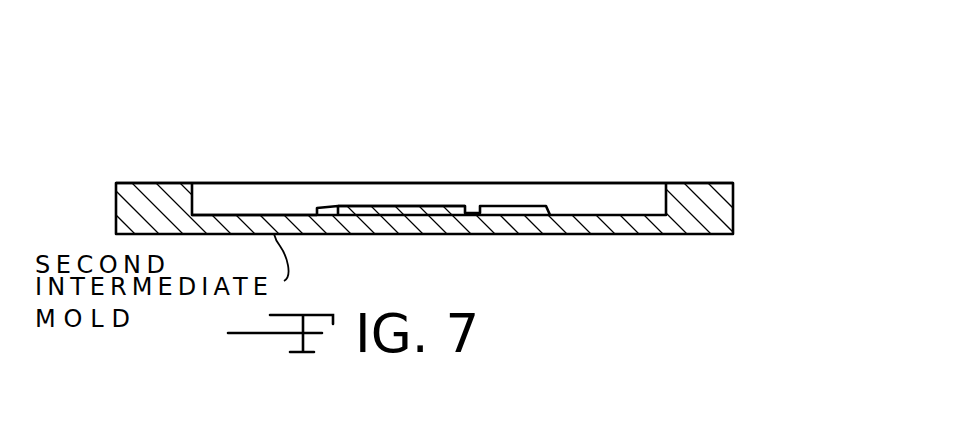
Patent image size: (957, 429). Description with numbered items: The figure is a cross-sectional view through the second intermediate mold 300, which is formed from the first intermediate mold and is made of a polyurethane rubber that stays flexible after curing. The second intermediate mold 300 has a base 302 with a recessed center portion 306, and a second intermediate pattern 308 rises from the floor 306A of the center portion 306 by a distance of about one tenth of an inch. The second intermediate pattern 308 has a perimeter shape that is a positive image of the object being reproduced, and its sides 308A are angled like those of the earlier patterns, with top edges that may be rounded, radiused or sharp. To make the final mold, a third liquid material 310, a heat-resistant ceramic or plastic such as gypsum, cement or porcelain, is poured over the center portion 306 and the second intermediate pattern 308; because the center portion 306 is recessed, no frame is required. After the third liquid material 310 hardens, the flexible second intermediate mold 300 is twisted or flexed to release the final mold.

The second intermediate mold 300 is at (572, 175).
The base 302 is at (720, 203).
The center portion 306 is at (623, 212).
The floor 306A is at (232, 208).
The second intermediate pattern 308 is at (480, 213).
The sides 308A is at (416, 211).
The third liquid material 310 is at (293, 183).